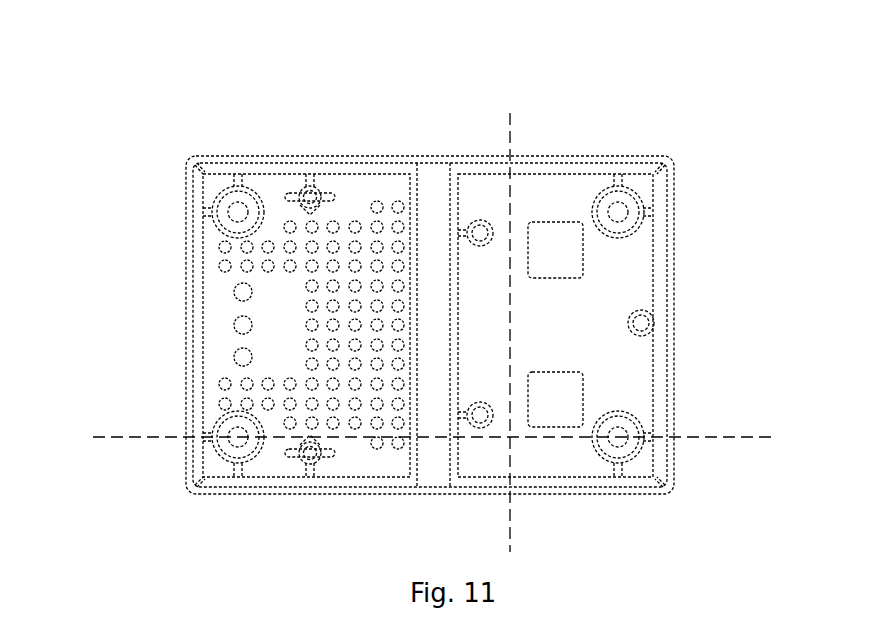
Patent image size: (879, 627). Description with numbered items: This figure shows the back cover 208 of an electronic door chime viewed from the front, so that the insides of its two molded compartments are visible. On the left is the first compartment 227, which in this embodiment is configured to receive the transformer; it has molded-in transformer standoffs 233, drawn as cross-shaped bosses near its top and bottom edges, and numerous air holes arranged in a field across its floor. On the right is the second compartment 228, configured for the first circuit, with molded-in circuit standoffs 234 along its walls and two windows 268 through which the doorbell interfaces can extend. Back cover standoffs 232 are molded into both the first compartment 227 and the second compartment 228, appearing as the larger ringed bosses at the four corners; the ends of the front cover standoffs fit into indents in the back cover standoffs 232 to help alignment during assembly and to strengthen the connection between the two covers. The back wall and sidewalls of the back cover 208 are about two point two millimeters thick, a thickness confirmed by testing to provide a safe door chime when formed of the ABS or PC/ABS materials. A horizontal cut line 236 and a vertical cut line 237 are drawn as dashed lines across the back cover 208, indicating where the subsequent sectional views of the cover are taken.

The back cover 208 is at (118, 116).
The first compartment 227 is at (278, 314).
The second compartment 228 is at (560, 310).
The back cover standoffs 232 is at (230, 203).
The transformer standoffs 233 is at (313, 193).
The circuit standoffs 234 is at (480, 227).
The cut line 236 is at (702, 442).
The cut line 237 is at (510, 518).
The windows 268 is at (560, 243).